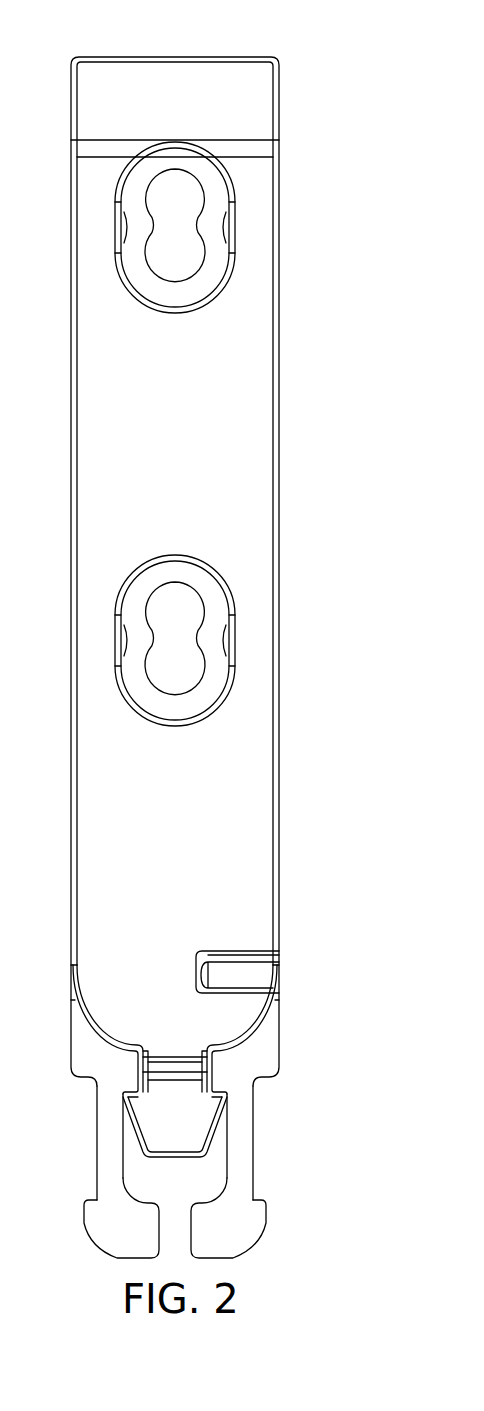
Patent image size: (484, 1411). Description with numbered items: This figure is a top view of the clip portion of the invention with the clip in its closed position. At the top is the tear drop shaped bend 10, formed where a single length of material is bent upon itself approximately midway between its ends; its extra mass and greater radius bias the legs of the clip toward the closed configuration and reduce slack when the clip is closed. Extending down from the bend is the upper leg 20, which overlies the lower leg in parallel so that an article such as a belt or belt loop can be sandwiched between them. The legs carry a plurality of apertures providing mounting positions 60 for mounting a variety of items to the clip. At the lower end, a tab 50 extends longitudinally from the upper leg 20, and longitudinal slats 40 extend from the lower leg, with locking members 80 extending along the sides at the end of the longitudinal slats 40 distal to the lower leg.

The tear drop shaped bend 10 is at (182, 68).
The upper leg 20 is at (175, 411).
The longitudinal slats 40 is at (97, 1154).
The tab 50 is at (175, 1137).
The mounting positions 60 is at (175, 228).
The locking members 80 is at (93, 1240).